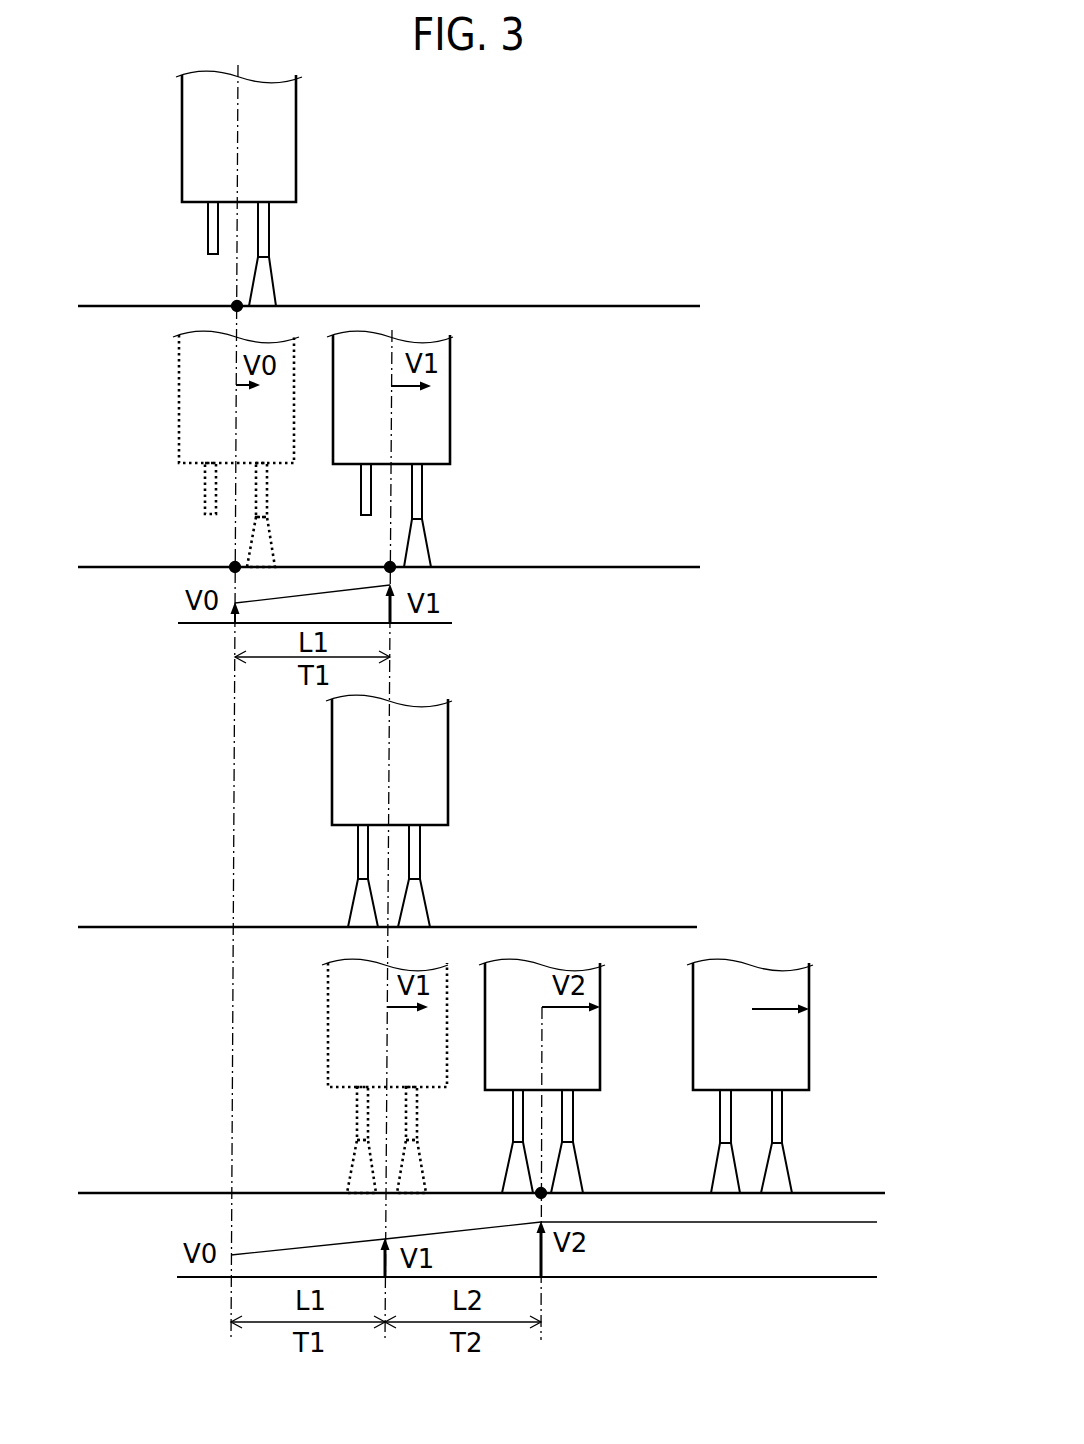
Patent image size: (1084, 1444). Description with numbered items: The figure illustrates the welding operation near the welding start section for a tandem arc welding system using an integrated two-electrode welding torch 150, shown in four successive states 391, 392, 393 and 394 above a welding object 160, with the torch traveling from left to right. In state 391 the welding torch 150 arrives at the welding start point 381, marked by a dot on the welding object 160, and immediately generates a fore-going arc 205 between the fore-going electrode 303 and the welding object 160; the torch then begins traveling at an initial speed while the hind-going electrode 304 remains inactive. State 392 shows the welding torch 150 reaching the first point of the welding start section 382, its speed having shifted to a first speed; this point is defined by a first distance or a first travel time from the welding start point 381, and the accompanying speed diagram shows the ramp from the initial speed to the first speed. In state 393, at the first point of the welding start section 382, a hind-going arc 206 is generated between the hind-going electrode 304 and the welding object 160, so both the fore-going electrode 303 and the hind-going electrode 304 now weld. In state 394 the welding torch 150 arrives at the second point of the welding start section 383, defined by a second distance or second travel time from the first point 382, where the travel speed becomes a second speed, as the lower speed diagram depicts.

The integrated 2-electrode welding torch 150 is at (196, 133).
The welding object 160 is at (525, 306).
The fore-going arc 205 is at (275, 289).
The hind-going arc 206 is at (353, 908).
The fore-going electrode 303 is at (269, 243).
The hind-going electrode 304 is at (207, 233).
The welding start point 381 is at (233, 302).
The first point of welding start section 382 is at (387, 565).
The second point of welding start section 383 is at (552, 1187).
The state 391 is at (474, 164).
The state 392 is at (510, 440).
The state 393 is at (508, 793).
The state 394 is at (827, 1058).